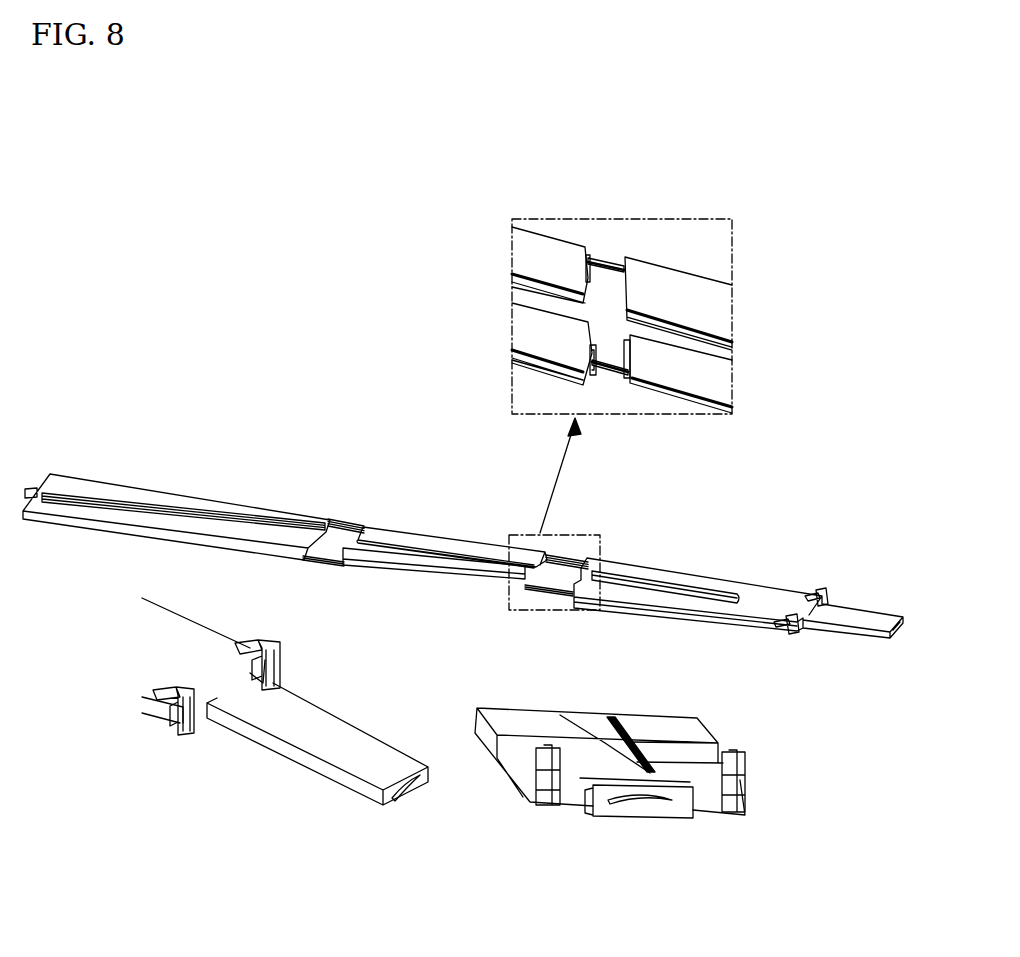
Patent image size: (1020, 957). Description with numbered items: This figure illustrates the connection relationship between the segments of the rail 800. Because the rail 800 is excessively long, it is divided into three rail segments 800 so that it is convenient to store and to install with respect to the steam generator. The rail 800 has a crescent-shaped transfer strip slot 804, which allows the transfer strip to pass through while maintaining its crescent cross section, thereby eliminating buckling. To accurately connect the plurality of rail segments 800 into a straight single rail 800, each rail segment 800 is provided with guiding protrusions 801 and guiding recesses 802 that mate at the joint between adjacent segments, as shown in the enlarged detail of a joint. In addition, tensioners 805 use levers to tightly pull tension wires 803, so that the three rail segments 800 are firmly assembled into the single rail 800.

The rail 800 is at (388, 535).
The guiding protrusion 801 is at (603, 385).
The guiding recess 802 is at (622, 390).
The tension wire 803 is at (608, 265).
The crescent-shaped transfer strip slot 804 is at (645, 802).
The tensioner 805 is at (207, 703).